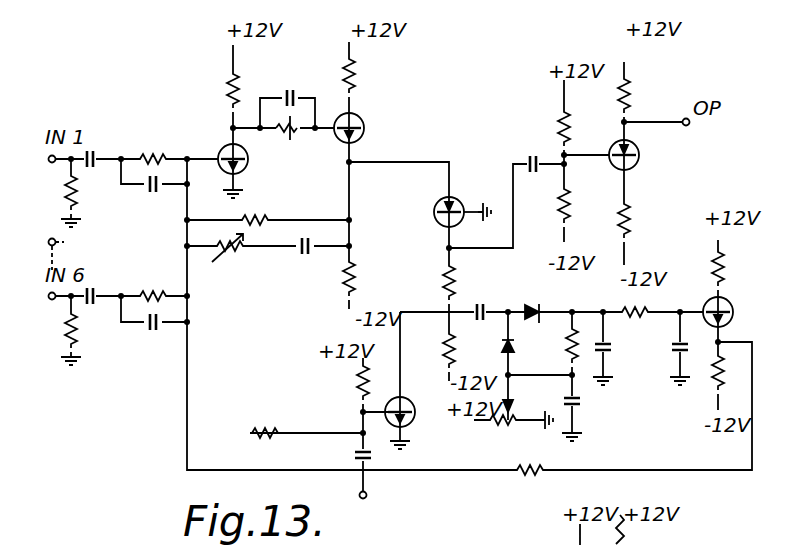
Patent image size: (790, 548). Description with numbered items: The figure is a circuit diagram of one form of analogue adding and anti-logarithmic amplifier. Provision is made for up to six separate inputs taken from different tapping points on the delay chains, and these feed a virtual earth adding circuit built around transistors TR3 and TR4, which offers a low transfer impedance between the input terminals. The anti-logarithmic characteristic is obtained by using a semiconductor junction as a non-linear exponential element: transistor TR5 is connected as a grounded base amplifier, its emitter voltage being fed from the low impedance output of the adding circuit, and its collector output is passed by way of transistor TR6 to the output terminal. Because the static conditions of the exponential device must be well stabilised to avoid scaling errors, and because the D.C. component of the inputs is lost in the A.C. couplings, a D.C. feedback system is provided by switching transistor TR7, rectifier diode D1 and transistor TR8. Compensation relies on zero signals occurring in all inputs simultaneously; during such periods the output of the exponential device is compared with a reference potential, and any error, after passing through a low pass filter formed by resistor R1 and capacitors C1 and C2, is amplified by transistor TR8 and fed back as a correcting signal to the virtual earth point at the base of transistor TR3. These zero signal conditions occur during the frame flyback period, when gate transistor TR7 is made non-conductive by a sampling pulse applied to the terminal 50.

The transistor TR3 is at (257, 163).
The transistor TR4 is at (373, 119).
The transistor TR5 is at (430, 220).
The transistor TR6 is at (646, 160).
The switching transistor TR7 is at (421, 424).
The transistor TR8 is at (739, 304).
The rectifier diode D1 is at (540, 301).
The resistor R1 is at (639, 325).
The capacitor C1 is at (613, 348).
The capacitor C2 is at (671, 348).
The terminal 50 is at (379, 496).